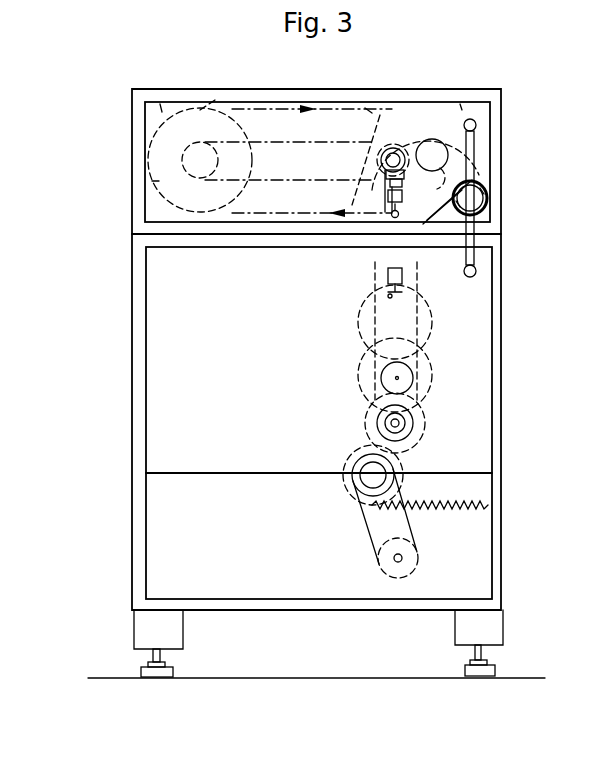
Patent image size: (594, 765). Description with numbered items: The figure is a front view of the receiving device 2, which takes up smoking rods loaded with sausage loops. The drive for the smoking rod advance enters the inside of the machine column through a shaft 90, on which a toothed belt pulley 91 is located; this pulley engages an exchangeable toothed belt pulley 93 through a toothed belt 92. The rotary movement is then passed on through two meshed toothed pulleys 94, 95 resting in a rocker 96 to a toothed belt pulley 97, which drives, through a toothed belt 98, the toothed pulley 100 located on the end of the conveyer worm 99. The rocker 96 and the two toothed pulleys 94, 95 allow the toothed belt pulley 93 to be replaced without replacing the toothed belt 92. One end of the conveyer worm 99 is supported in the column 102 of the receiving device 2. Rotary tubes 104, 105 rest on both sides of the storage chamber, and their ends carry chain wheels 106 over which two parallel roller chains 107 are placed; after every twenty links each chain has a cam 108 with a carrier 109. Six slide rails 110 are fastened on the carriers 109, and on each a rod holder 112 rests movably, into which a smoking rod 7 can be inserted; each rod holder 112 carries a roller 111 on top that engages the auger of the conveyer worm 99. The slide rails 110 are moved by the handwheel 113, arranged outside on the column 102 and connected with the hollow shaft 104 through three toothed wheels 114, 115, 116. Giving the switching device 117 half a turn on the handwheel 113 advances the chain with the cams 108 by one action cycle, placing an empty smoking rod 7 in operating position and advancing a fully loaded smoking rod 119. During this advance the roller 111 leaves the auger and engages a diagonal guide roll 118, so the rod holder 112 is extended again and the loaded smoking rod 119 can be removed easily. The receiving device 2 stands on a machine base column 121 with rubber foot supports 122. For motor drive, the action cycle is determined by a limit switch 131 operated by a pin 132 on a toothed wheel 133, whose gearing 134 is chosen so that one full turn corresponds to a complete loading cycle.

The receiving device 2 is at (504, 88).
The smoking rod 7 is at (241, 110).
The shaft 90 is at (412, 567).
The toothed belt pulley 91 is at (418, 560).
The toothed belt 92 is at (405, 537).
The exchangeable toothed belt pulley 93 is at (496, 505).
The toothed pulley 94 is at (400, 486).
The toothed pulley 95 is at (420, 443).
The rocker 96 is at (425, 458).
The toothed belt pulley 97 is at (428, 422).
The toothed belt 98 is at (435, 396).
The conveyer worm 99 is at (402, 146).
The toothed pulley 100 is at (370, 108).
The column 102 is at (275, 118).
The rotary tube 104 is at (447, 159).
The rotary tube 105 is at (185, 160).
The chain wheel 106 is at (162, 104).
The roller chain 107 is at (228, 118).
The cam 108 is at (375, 180).
The carrier 109 is at (382, 174).
The slide rail 110 is at (386, 192).
The roller 111 is at (380, 168).
The rod holder 112 is at (391, 215).
The handwheel 113 is at (486, 200).
The toothed wheel 114 is at (490, 213).
The toothed wheel 115 is at (480, 180).
The toothed wheel 116 is at (476, 134).
The switching device 117 is at (486, 214).
The diagonal guide roll 118 is at (264, 180).
The loaded smoking rod 119 is at (152, 181).
The machine base column 121 is at (486, 627).
The foot support 122 is at (482, 668).
The limit switch 131 is at (408, 283).
The pin 132 is at (432, 317).
The toothed wheel 133 is at (436, 341).
The gearing 134 is at (442, 365).